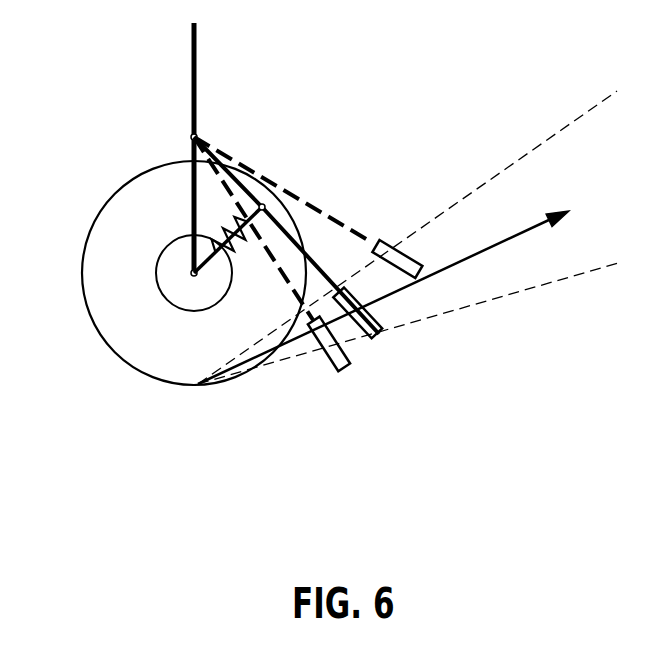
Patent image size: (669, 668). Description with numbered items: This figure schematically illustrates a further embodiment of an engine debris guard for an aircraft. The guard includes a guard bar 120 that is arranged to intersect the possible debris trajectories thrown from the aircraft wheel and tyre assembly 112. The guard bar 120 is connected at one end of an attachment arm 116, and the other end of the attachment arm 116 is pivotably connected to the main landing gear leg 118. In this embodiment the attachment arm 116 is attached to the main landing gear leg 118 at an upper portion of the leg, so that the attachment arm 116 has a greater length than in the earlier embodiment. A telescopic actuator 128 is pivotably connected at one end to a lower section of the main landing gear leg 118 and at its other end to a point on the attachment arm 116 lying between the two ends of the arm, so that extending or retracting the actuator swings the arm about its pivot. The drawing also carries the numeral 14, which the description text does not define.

The field of view / sensing direction arrow 14 is at (400, 318).
The aircraft wheel and tyre assembly 112 is at (82, 272).
The attachment arm 116 is at (308, 262).
The main landing gear leg 118 is at (198, 80).
The guard bar 120 is at (378, 335).
The telescopic actuator 128 is at (232, 226).